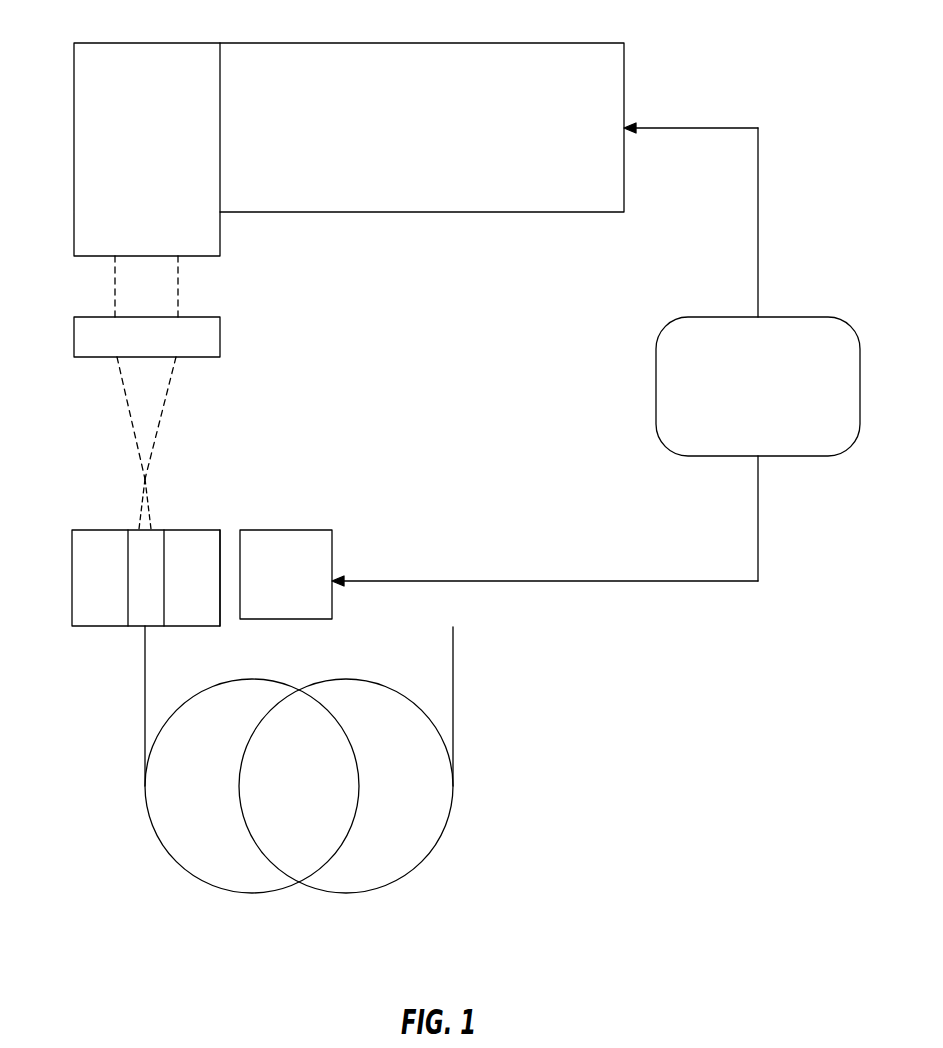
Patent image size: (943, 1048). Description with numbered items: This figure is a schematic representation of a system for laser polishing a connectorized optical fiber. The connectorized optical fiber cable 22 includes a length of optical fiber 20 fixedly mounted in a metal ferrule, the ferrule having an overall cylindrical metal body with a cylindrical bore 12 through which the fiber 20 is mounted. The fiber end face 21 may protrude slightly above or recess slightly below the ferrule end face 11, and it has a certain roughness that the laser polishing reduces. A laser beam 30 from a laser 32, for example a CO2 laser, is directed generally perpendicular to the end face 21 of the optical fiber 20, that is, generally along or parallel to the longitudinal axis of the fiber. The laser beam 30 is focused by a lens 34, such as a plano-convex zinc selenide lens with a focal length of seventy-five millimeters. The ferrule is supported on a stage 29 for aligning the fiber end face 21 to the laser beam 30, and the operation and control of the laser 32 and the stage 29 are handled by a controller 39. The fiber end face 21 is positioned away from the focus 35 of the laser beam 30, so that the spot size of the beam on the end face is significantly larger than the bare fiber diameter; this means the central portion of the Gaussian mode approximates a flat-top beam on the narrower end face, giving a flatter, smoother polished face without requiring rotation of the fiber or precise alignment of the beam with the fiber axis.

The ferrule end face 11 is at (218, 528).
The cylindrical bore 12 is at (130, 608).
The optical fiber 20 is at (147, 557).
The fiber end face 21 is at (145, 528).
The connectorized optical fiber cable 22 is at (152, 858).
The stage 29 is at (301, 592).
The laser beam 30 is at (127, 398).
The laser 32 is at (423, 44).
The lens 34 is at (221, 338).
The focus 35 is at (145, 484).
The controller 39 is at (773, 403).